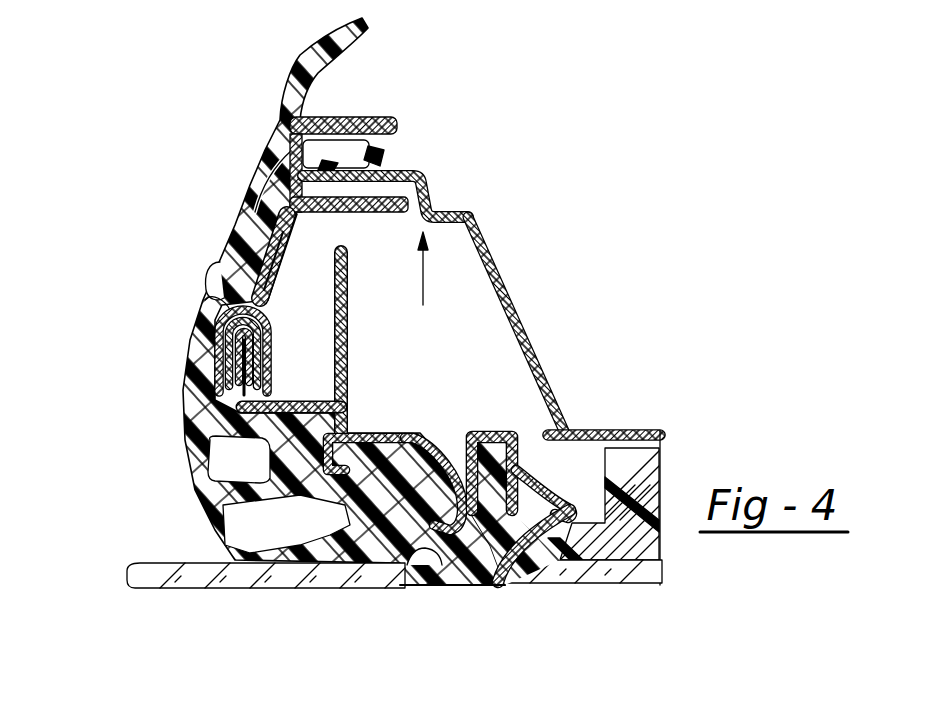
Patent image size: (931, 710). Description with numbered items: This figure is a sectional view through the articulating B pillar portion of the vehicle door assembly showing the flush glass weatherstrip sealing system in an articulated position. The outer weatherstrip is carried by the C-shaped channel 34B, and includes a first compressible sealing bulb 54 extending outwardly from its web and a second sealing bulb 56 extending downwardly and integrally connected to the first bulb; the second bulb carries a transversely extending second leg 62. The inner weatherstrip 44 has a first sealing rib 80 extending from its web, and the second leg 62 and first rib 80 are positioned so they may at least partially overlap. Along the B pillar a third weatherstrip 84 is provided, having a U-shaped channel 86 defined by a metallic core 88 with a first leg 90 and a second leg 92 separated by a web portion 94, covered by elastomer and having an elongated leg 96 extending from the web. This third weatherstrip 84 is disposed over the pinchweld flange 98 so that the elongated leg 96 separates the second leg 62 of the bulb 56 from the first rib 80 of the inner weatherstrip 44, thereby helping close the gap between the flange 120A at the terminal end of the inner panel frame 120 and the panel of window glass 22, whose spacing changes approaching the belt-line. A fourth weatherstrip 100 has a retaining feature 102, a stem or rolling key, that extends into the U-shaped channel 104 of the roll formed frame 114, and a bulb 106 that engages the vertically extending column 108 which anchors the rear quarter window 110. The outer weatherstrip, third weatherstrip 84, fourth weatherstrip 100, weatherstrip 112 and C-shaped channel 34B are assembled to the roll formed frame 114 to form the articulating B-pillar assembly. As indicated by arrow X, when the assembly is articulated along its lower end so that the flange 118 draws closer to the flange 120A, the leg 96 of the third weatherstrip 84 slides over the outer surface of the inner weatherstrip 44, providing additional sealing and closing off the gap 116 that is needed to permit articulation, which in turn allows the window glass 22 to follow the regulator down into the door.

The panel of window glass 22 is at (128, 584).
The C-shaped channel 34B is at (408, 436).
The inner weatherstrip 44 is at (290, 124).
The first compressible sealing bulb 54 is at (433, 586).
The second sealing bulb 56 is at (200, 455).
The second leg 62 is at (210, 272).
The first sealing rib 80 is at (292, 258).
The third weatherstrip 84 is at (272, 292).
The U-shaped channel 86 is at (265, 318).
The metallic core 88 is at (274, 352).
The first leg 90 is at (215, 365).
The second leg 92 is at (277, 377).
The web portion 94 is at (217, 310).
The elongated leg 96 is at (265, 192).
The pinchweld flange 98 is at (212, 338).
The fourth weatherstrip 100 is at (560, 430).
The retaining feature 102 is at (480, 430).
The U-shaped channel 104 is at (492, 430).
The bulb 106 is at (560, 490).
The vertically extending column 108 is at (553, 575).
The rear quarter window 110 is at (665, 577).
The weatherstrip 112 is at (492, 578).
The roll formed frame 114 is at (372, 432).
The gap 116 is at (362, 333).
The flange 118 is at (350, 290).
The inner panel frame 120 is at (498, 254).
The flange 120A is at (395, 167).